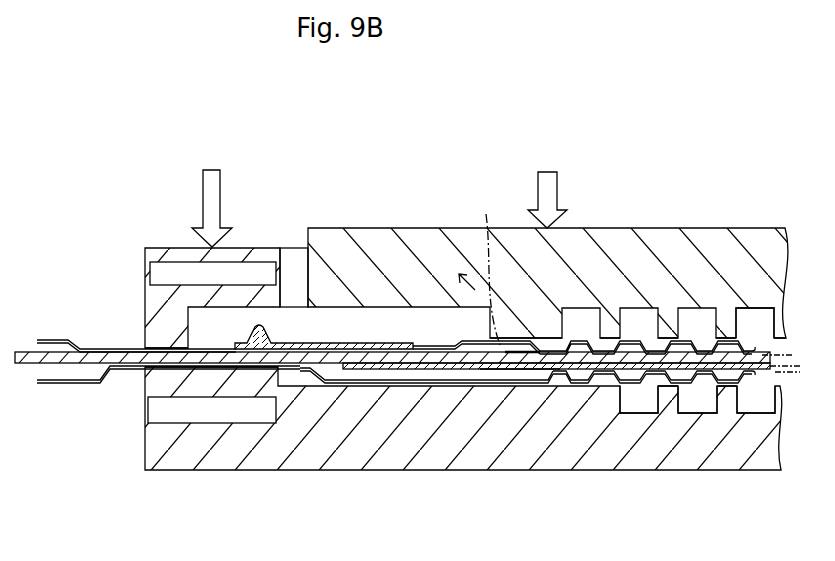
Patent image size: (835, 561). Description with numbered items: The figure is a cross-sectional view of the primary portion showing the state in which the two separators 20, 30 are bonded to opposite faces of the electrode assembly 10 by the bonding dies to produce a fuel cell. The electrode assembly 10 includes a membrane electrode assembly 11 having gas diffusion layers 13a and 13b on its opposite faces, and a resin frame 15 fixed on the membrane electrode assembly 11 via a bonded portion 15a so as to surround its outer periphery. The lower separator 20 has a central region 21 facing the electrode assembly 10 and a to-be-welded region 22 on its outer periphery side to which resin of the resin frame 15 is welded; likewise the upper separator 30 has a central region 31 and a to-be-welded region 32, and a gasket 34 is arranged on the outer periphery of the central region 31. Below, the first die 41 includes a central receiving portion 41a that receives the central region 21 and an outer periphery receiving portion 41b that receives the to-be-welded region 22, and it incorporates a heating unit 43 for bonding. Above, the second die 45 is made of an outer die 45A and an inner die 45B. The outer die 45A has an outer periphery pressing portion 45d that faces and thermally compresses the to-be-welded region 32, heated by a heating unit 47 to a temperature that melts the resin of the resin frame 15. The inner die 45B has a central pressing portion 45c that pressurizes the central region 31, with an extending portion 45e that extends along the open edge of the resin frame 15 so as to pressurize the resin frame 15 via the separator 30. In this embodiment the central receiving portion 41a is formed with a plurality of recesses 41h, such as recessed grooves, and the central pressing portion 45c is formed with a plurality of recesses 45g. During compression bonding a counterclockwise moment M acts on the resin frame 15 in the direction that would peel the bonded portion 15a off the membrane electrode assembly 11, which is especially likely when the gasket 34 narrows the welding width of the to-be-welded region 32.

The electrode assembly 10 is at (80, 368).
The membrane electrode assembly 11 is at (617, 385).
The gas diffusion layer 13a is at (515, 372).
The gas diffusion layer 13b is at (603, 352).
The resin frame 15 is at (300, 366).
The bonded portion 15a is at (518, 362).
The separator 20 is at (557, 382).
The central region 21 is at (643, 380).
The to-be-welded region 22 is at (150, 366).
The separator 30 is at (452, 338).
The central region 31 is at (650, 338).
The to-be-welded region 32 is at (135, 349).
The gasket 34 is at (290, 343).
The first die 41 is at (380, 472).
The central receiving portion 41a is at (728, 392).
The outer periphery receiving portion 41b is at (148, 392).
The recesses 41h is at (632, 403).
The heating unit 43 is at (250, 424).
The second die 45 is at (362, 148).
The outer die 45A is at (194, 248).
The inner die 45B is at (356, 243).
The central pressing portion 45c is at (722, 330).
The outer periphery pressing portion 45d is at (158, 349).
The extending portion 45e is at (512, 333).
The recesses 45g is at (577, 318).
The heating unit 47 is at (158, 260).
The moment M is at (479, 266).